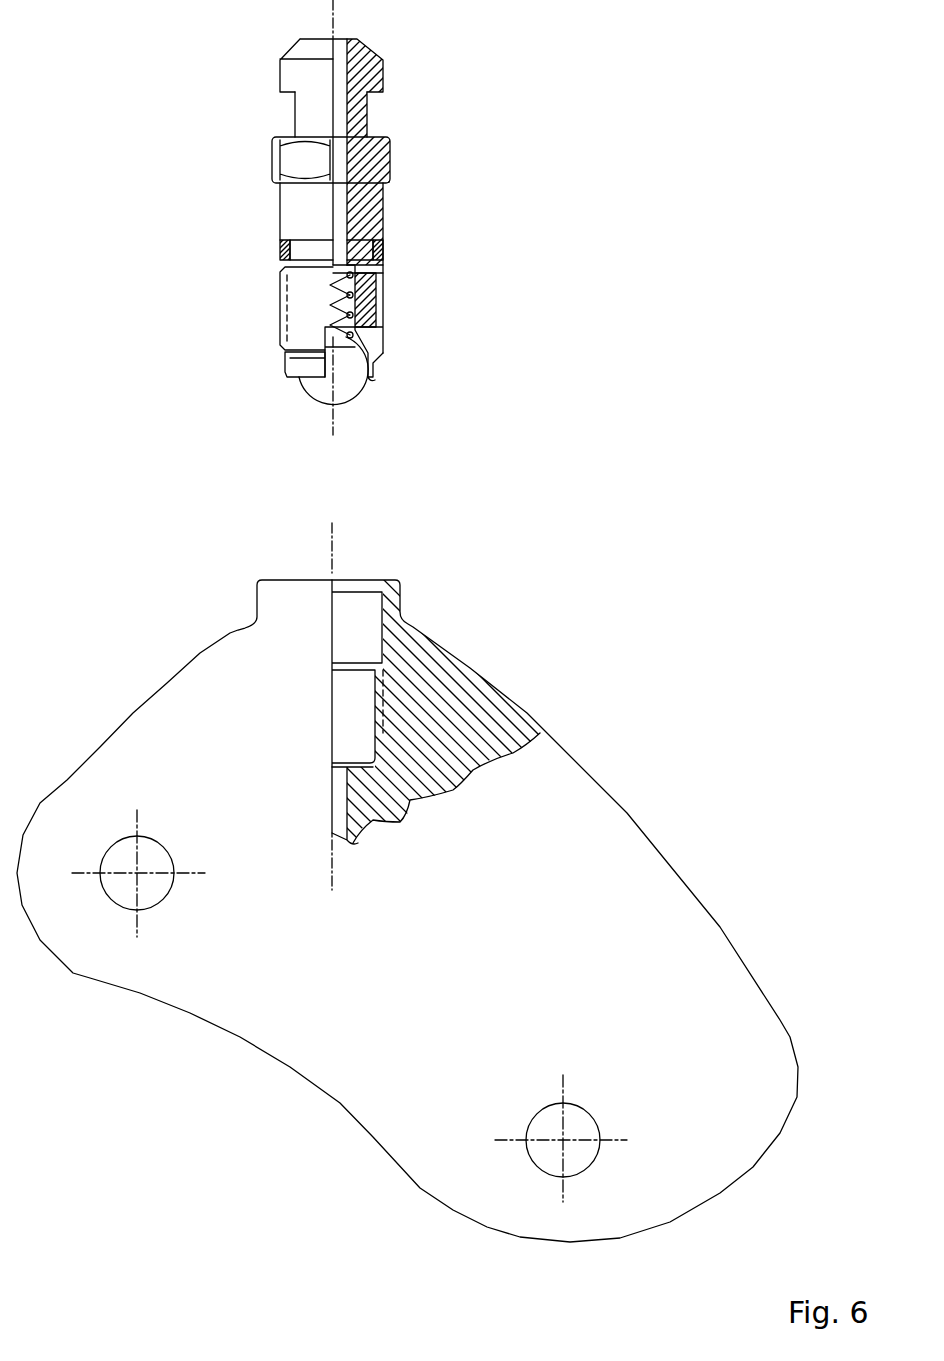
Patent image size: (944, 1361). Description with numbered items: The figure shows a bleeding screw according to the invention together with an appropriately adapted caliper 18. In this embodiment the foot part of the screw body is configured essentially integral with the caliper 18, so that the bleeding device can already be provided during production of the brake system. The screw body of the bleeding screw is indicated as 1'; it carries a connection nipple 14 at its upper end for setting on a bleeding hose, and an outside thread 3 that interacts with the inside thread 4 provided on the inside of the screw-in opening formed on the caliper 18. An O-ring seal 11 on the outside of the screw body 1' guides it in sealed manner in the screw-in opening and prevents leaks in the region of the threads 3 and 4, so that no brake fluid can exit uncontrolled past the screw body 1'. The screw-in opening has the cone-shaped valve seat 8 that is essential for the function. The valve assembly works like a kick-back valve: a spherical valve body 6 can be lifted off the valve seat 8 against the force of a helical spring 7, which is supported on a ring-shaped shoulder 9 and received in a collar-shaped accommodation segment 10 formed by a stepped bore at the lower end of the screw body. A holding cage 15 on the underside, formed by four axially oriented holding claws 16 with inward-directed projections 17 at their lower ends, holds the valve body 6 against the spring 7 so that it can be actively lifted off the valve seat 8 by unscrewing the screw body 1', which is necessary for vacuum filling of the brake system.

The connection nipple 14 is at (295, 78).
The screw body of the bleeding screw 1' is at (369, 152).
The O-ring seal 11 is at (282, 250).
The ring-shaped shoulder 9 is at (372, 268).
The helical spring 7 is at (352, 297).
The accommodation segment 10 is at (363, 308).
The holding cage 15 is at (373, 337).
The outside thread 3 is at (280, 312).
The holding claws 16 is at (303, 365).
The spherical valve body 6 is at (325, 392).
The projections 17 is at (373, 375).
The inside thread 4 is at (382, 695).
The cone-shaped valve seat surface 8 is at (350, 768).
The caliper 18 is at (325, 1003).